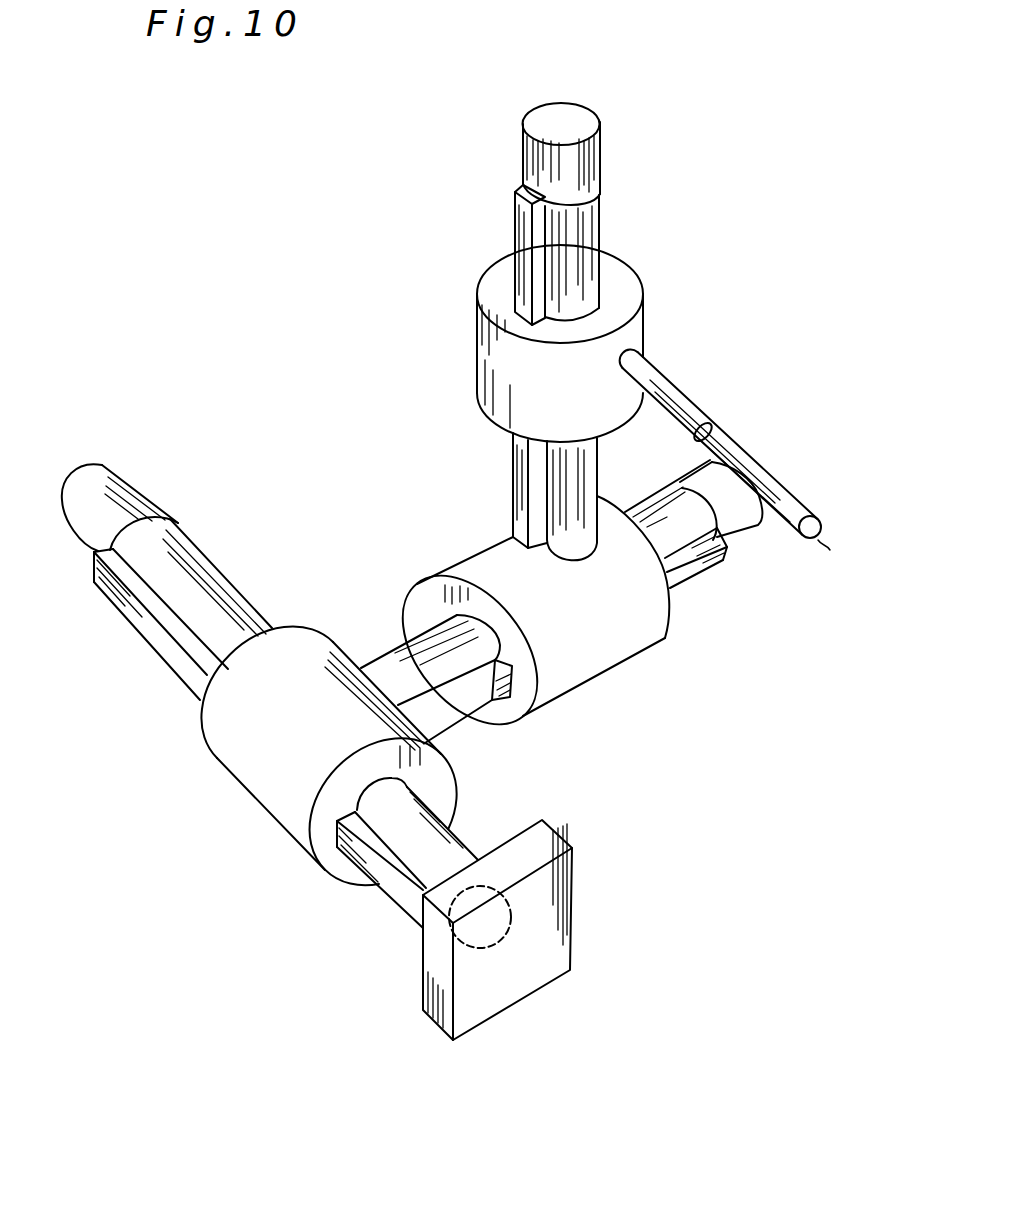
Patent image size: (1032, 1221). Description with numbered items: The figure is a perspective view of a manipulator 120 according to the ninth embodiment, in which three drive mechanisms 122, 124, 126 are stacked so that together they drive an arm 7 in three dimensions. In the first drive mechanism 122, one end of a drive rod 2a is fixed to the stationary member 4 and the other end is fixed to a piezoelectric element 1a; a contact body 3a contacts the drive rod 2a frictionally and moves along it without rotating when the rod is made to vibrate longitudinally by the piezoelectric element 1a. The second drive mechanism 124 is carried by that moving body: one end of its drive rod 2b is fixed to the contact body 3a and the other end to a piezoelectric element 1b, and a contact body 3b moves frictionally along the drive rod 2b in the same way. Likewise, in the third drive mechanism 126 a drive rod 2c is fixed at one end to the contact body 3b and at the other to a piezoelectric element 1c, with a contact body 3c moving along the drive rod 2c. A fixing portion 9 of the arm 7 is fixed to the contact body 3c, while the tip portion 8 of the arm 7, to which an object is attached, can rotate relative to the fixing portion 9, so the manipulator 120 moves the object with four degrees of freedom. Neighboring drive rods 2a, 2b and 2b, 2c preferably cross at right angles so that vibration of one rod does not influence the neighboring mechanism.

The piezoelectric element 1a is at (114, 474).
The piezoelectric element 1b is at (740, 525).
The piezoelectric element 1c is at (590, 124).
The drive rod 2a is at (195, 570).
The drive rod 2b is at (673, 533).
The drive rod 2c is at (578, 236).
The contact body 3a is at (233, 742).
The contact body 3b is at (583, 652).
The contact body 3c is at (622, 283).
The stationary member 4 is at (543, 833).
The arm 7 is at (683, 392).
The tip portion 8 is at (787, 507).
The fixing portion 9 is at (650, 378).
The manipulator 120 is at (793, 101).
The first drive mechanism 122 is at (362, 912).
The second drive mechanism 124 is at (427, 557).
The third drive mechanism 126 is at (485, 223).